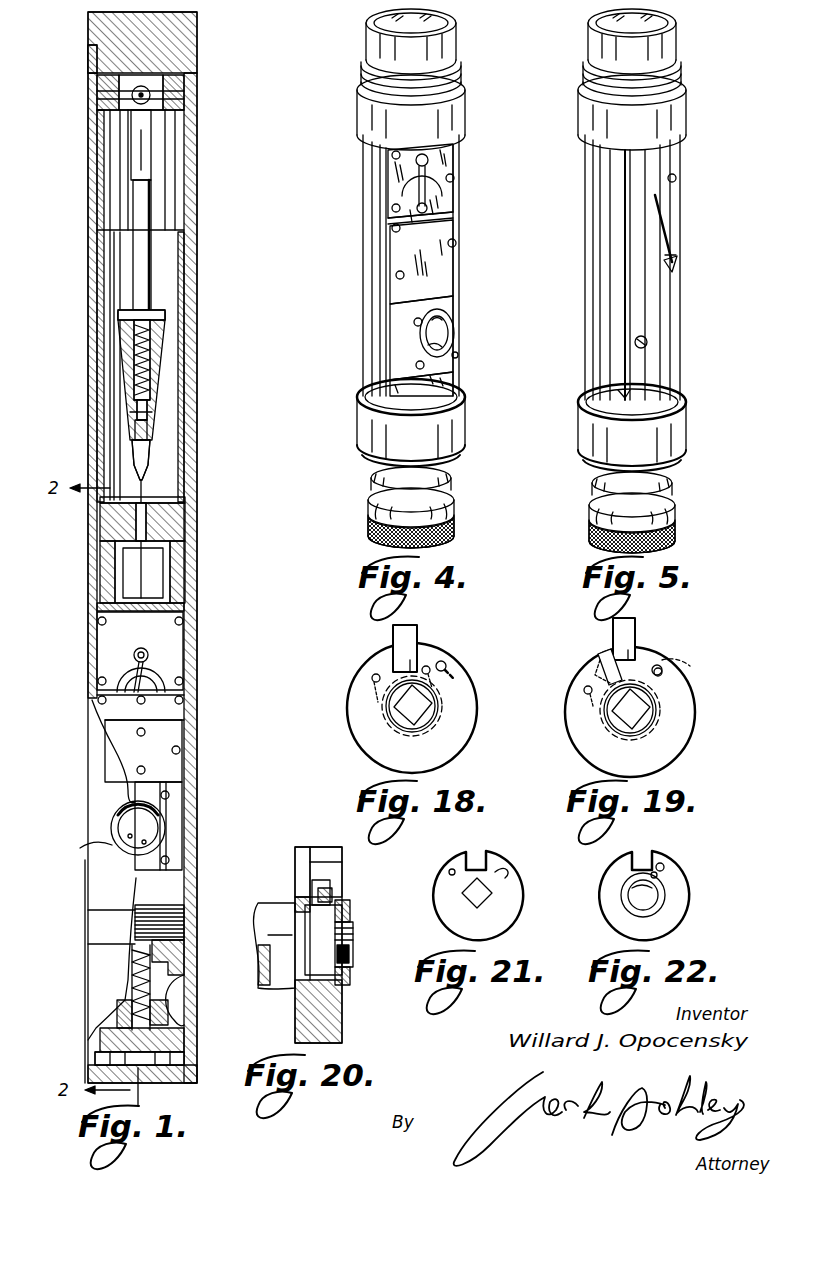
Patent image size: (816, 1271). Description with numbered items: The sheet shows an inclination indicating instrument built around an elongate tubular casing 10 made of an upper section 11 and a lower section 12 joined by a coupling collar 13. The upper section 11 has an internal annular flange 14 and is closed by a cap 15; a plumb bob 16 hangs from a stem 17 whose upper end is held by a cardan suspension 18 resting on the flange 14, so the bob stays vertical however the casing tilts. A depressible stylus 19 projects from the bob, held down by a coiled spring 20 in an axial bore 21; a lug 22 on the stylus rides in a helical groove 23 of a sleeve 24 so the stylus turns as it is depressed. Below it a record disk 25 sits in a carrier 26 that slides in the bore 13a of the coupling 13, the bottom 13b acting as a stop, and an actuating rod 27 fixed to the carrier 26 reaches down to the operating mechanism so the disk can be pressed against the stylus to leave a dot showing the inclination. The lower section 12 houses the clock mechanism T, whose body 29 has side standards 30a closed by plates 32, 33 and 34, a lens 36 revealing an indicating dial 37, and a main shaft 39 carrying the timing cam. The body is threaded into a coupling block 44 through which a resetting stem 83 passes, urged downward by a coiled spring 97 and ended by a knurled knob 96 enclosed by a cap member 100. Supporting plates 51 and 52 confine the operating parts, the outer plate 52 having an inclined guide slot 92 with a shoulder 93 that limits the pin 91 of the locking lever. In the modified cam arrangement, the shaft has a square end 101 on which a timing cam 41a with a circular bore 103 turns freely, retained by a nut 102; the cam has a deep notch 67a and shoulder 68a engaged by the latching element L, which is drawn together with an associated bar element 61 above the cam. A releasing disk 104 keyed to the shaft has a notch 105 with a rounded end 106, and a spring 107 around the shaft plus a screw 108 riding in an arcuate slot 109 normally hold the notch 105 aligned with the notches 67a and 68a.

In FIG. 1, the tubular casing 10 is at (97, 293).
In FIG. 1, the upper section 11 is at (197, 438).
In FIG. 1, the lower section 12 is at (182, 735).
In FIG. 1, the coupling collar 13 is at (184, 598).
In FIG. 4, the coupling collar 13 is at (372, 110).
In FIG. 5, the coupling collar 13 is at (672, 110).
In FIG. 1, the bore 13a is at (180, 575).
In FIG. 1, the bottom 13b is at (165, 640).
In FIG. 1, the internal annular flange 14 is at (184, 115).
In FIG. 1, the plug or cap 15 is at (180, 28).
In FIG. 1, the plumb bob 16 is at (165, 318).
In FIG. 1, the stem 17 is at (150, 200).
In FIG. 1, the cardan suspension 18 is at (97, 83).
In FIG. 1, the marking element or stylus 19 is at (142, 475).
In FIG. 1, the coiled spring 20 is at (134, 360).
In FIG. 1, the axial bore 21 is at (150, 348).
In FIG. 1, the lug 22 is at (132, 412).
In FIG. 1, the helical groove 23 is at (150, 408).
In FIG. 1, the sleeve 24 is at (136, 435).
In FIG. 1, the record disk 25 is at (185, 496).
In FIG. 1, the support or carrier 26 is at (170, 523).
In FIG. 4, the support or carrier 26 is at (365, 44).
In FIG. 5, the support or carrier 26 is at (676, 44).
In FIG. 1, the actuating rod 27 is at (132, 568).
In FIG. 4, the body portion 29 is at (378, 165).
In FIG. 5, the body portion 29 is at (590, 188).
In FIG. 4, the vertical standards 30a is at (372, 300).
In FIG. 5, the vertical standards 30a is at (594, 335).
In FIG. 1, the plate 32 is at (180, 665).
In FIG. 4, the plate 32 is at (445, 152).
In FIG. 1, the plate 33 is at (175, 705).
In FIG. 4, the plate 33 is at (445, 200).
In FIG. 1, the plate 34 is at (170, 770).
In FIG. 4, the plate 34 is at (450, 260).
In FIG. 4, the lens 36 is at (458, 335).
In FIG. 1, the indicating dial 37 is at (112, 855).
In FIG. 20, the main shaft 39 is at (272, 915).
In FIG. 18, the timing cam 41a is at (455, 752).
In FIG. 20, the timing cam 41a is at (342, 1035).
In FIG. 1, the coupling block 44 is at (175, 945).
In FIG. 4, the coupling block 44 is at (462, 440).
In FIG. 5, the coupling block 44 is at (684, 440).
In FIG. 5, the supporting plate 51 is at (620, 285).
In FIG. 5, the supporting plate 52 is at (660, 352).
In FIG. 18, the tab 61 is at (417, 632).
In FIG. 19, the tab 61 is at (613, 636).
In FIG. 18, the deep notch 67a is at (372, 675).
In FIG. 19, the deep notch 67a is at (598, 660).
In FIG. 22, the deep notch 67a is at (638, 860).
In FIG. 18, the offset or shoulder 68a is at (428, 662).
In FIG. 22, the offset or shoulder 68a is at (662, 858).
In FIG. 1, the resetting stem 83 is at (168, 1012).
In FIG. 5, the pin 91 is at (677, 263).
In FIG. 5, the inclined guide slot 92 is at (676, 225).
In FIG. 5, the shoulder 93 is at (664, 248).
In FIG. 1, the knurled hand knob 96 is at (170, 1040).
In FIG. 4, the knurled hand knob 96 is at (452, 522).
In FIG. 5, the knurled hand knob 96 is at (673, 527).
In FIG. 1, the coiled spring 97 is at (150, 985).
In FIG. 1, the cap member 100 is at (95, 1058).
In FIG. 20, the square end 101 is at (350, 912).
In FIG. 20, the nut 102 is at (350, 975).
In FIG. 20, the circular bore 103 is at (330, 890).
In FIG. 22, the circular bore 103 is at (665, 892).
In FIG. 20, the releasing disk 104 is at (295, 905).
In FIG. 21, the releasing disk 104 is at (500, 920).
In FIG. 20, the recess or notch 105 is at (300, 870).
In FIG. 21, the recess or notch 105 is at (466, 862).
In FIG. 19, the rounded end 106 is at (650, 660).
In FIG. 21, the rounded end 106 is at (486, 852).
In FIG. 19, the spring 107 is at (585, 700).
In FIG. 20, the spring 107 is at (353, 938).
In FIG. 18, the pin or screw 108 is at (446, 664).
In FIG. 19, the arcuate slot 109 is at (688, 668).
In FIG. 21, the arcuate slot 109 is at (506, 880).
In FIG. 18, the latching element L is at (393, 640).
In FIG. 19, the latching element L is at (635, 625).
In FIG. 1, the timing or clock mechanism T is at (108, 650).